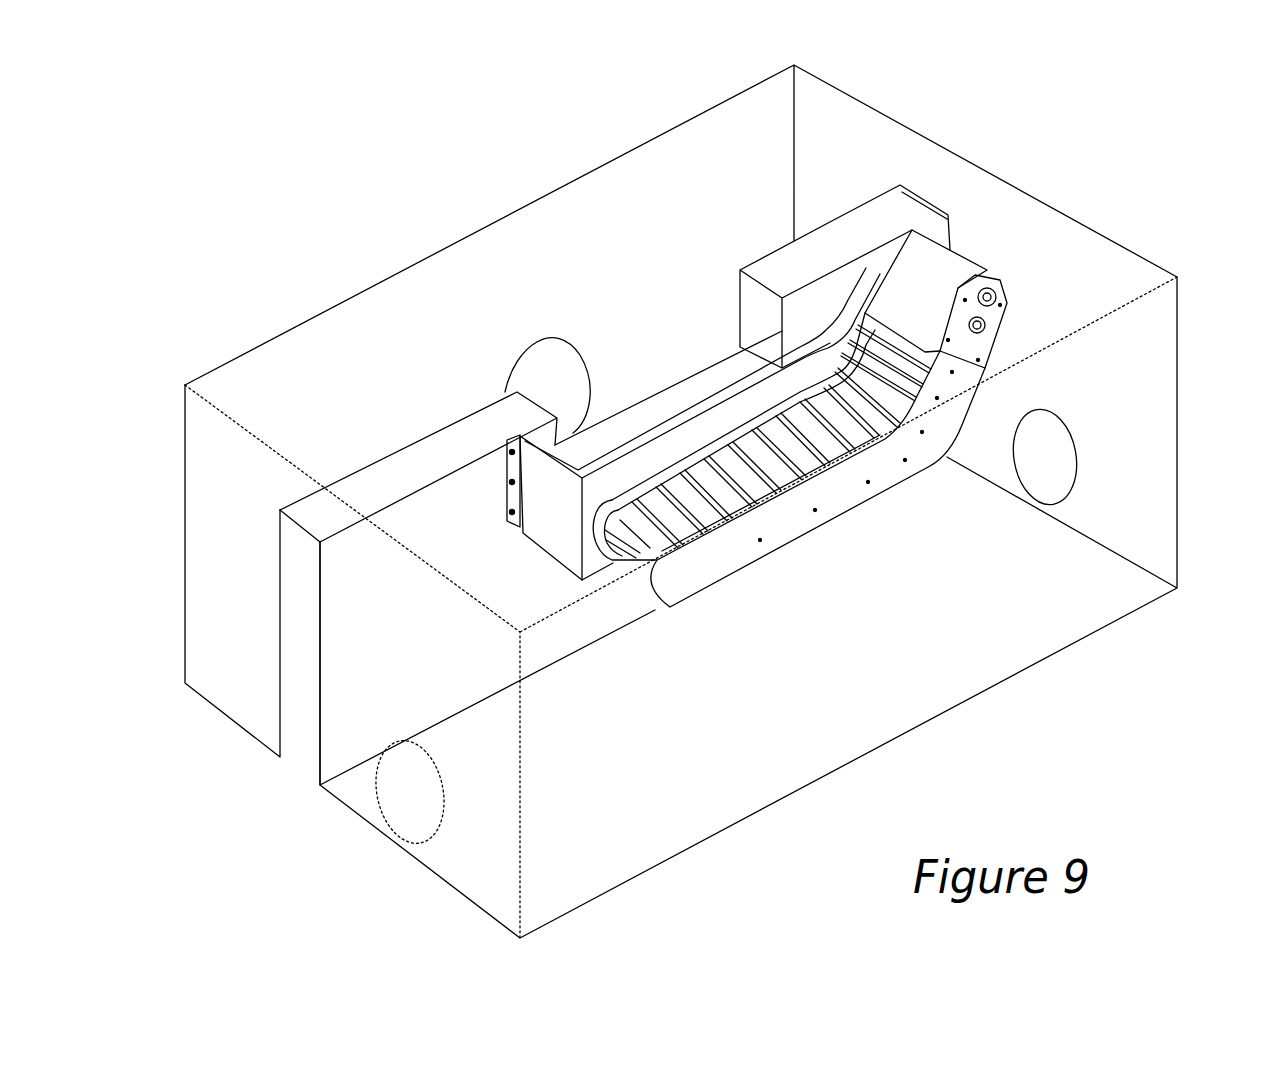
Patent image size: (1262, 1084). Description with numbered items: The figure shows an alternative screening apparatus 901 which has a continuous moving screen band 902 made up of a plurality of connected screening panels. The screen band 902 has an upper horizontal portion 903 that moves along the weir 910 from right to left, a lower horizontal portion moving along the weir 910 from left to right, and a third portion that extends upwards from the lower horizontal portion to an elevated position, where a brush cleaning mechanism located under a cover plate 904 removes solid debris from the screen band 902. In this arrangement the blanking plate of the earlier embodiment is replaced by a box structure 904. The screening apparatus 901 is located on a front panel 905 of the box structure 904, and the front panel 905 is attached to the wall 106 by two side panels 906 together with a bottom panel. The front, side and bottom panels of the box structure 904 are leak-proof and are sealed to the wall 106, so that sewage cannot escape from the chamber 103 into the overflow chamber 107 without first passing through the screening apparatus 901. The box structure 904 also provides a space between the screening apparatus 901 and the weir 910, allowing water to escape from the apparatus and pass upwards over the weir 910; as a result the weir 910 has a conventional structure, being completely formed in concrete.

The chamber 103 is at (1133, 367).
The wall 106 is at (390, 473).
The overflow chamber 107 is at (232, 655).
The screening apparatus 901 is at (879, 552).
The screen band 902 is at (614, 560).
The upper horizontal portion 903 is at (790, 457).
The box structure 904 is at (933, 285).
The front panel 905 is at (725, 420).
The side panels 906 is at (550, 505).
The weir 910 is at (647, 417).